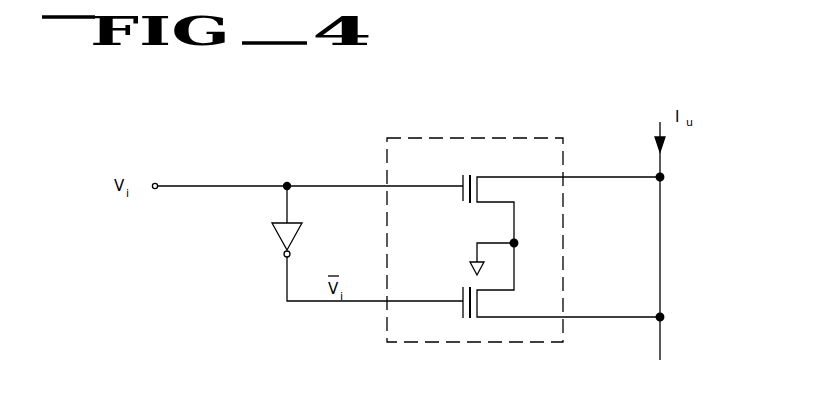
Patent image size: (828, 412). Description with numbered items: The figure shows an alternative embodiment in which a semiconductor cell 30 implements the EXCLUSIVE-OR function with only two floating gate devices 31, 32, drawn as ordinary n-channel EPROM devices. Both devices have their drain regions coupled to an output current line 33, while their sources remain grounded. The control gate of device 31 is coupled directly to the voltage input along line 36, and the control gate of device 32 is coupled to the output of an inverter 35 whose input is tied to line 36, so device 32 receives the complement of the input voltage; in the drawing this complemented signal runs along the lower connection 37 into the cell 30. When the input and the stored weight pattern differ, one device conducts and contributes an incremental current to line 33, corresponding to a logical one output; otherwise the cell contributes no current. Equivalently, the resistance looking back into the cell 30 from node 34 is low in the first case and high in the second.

The semiconductor cell 30 is at (444, 117).
The floating gate device 31 is at (468, 206).
The floating gate device 32 is at (465, 284).
The output current line 33 is at (661, 260).
The node 34 is at (663, 318).
The inverter 35 is at (297, 237).
The line 36 is at (228, 186).
The inverted input line 37 is at (287, 287).